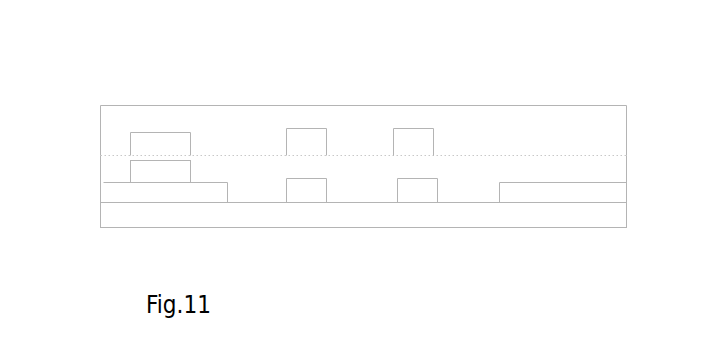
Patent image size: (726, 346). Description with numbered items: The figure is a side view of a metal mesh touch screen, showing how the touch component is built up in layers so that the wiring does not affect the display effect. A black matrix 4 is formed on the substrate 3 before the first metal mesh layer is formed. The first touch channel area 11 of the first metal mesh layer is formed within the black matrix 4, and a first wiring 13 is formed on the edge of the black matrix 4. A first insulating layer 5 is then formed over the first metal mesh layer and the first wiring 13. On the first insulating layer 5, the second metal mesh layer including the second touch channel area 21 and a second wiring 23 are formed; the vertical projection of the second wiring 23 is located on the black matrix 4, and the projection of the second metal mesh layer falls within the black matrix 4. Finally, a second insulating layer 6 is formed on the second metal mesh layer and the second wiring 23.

The substrate 3 is at (625, 213).
The black matrix 4 is at (163, 193).
The first insulating layer 5 is at (549, 175).
The second insulating layer 6 is at (298, 117).
The first touch channel area 11 is at (428, 192).
The first wiring 13 is at (162, 167).
The second touch channel area 21 is at (417, 140).
The second wiring 23 is at (162, 140).